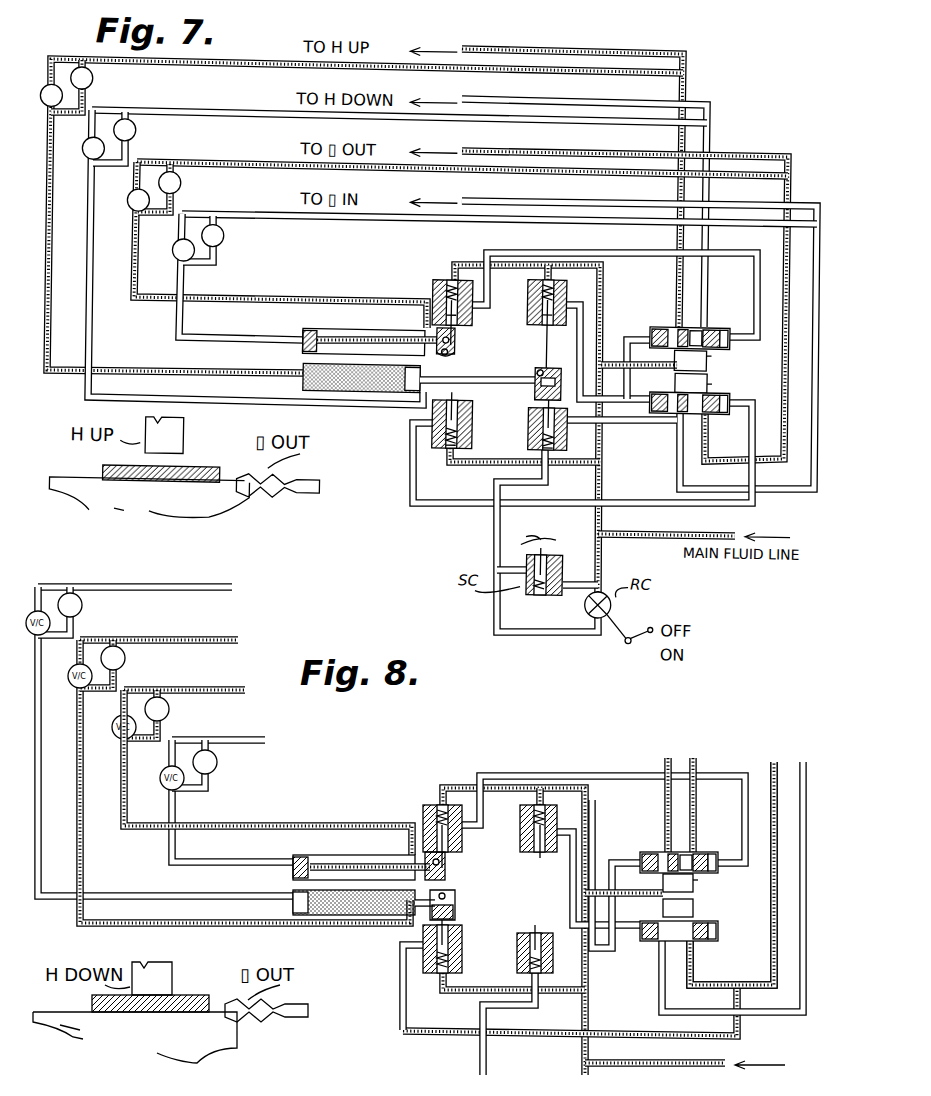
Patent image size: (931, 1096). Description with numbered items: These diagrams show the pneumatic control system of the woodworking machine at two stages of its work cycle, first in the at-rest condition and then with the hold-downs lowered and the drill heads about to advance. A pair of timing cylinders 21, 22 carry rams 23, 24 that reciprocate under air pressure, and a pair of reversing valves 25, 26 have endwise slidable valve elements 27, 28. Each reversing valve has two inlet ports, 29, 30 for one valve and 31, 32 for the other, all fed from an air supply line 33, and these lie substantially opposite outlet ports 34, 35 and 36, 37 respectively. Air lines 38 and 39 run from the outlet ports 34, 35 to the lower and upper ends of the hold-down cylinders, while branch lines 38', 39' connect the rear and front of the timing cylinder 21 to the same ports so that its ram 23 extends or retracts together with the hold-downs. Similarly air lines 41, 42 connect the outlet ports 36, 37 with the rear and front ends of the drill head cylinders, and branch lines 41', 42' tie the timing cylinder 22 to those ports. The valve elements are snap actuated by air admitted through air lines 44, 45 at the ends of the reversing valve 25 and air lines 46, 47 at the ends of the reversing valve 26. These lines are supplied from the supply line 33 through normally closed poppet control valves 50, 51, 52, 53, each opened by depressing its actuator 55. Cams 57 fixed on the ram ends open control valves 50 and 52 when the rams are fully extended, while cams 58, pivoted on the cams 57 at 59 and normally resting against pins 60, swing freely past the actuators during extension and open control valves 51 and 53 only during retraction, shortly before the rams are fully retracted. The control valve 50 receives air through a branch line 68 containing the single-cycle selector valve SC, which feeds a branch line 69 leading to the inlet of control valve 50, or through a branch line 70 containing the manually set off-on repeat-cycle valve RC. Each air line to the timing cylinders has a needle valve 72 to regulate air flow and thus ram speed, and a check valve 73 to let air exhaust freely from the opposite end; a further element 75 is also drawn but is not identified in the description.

In FIG. 7, the timing cylinder 21 is at (389, 398).
In FIG. 8, the timing cylinder 21 is at (350, 925).
In FIG. 7, the timing cylinder 22 is at (310, 340).
In FIG. 8, the timing cylinder 22 is at (293, 855).
In FIG. 7, the ram 23 is at (526, 384).
In FIG. 8, the ram 23 is at (385, 920).
In FIG. 7, the ram 24 is at (385, 337).
In FIG. 8, the ram 24 is at (370, 857).
In FIG. 7, the reversing valve 25 is at (657, 325).
In FIG. 8, the reversing valve 25 is at (642, 852).
In FIG. 7, the reversing valve 26 is at (659, 412).
In FIG. 8, the reversing valve 26 is at (642, 940).
In FIG. 7, the valve element 27 is at (721, 325).
In FIG. 8, the valve element 27 is at (710, 853).
In FIG. 7, the valve element 28 is at (729, 392).
In FIG. 8, the valve element 28 is at (714, 918).
In FIG. 7, the inlet port 29 is at (676, 356).
In FIG. 8, the inlet port 29 is at (662, 883).
In FIG. 7, the inlet port 30 is at (713, 355).
In FIG. 8, the inlet port 30 is at (698, 884).
In FIG. 7, the inlet port 31 is at (676, 382).
In FIG. 7, the inlet port 32 is at (714, 383).
In FIG. 8, the inlet port 32 is at (695, 906).
In FIG. 7, the air supply line 33 is at (608, 478).
In FIG. 8, the air supply line 33 is at (592, 1005).
In FIG. 7, the outlet port 34 is at (680, 325).
In FIG. 8, the outlet port 34 is at (670, 852).
In FIG. 7, the outlet port 35 is at (707, 324).
In FIG. 8, the outlet port 35 is at (697, 852).
In FIG. 7, the outlet port 36 is at (682, 413).
In FIG. 7, the outlet port 37 is at (712, 412).
In FIG. 8, the outlet port 37 is at (693, 938).
In FIG. 7, the air lines 38 is at (571, 178).
In FIG. 7, the branch line 38' is at (364, 206).
In FIG. 7, the air lines 39 is at (611, 204).
In FIG. 8, the air lines 39 is at (701, 794).
In FIG. 7, the branch line 39' is at (396, 247).
In FIG. 8, the branch line 39' is at (165, 741).
In FIG. 7, the air lines 41 is at (638, 353).
In FIG. 7, the branch line 41' is at (498, 268).
In FIG. 7, the air lines 42 is at (636, 288).
In FIG. 8, the air lines 42 is at (740, 859).
In FIG. 7, the branch line 42' is at (461, 236).
In FIG. 8, the branch line 42' is at (268, 772).
In FIG. 7, the air line 44 is at (625, 333).
In FIG. 7, the air line 45 is at (737, 337).
In FIG. 7, the air line 46 is at (642, 420).
In FIG. 7, the air line 47 is at (757, 412).
In FIG. 8, the air line 47 is at (407, 1034).
In FIG. 7, the control valve 50 is at (562, 437).
In FIG. 8, the control valve 50 is at (552, 958).
In FIG. 7, the control valve 51 is at (431, 297).
In FIG. 8, the control valve 51 is at (423, 818).
In FIG. 7, the control valve 52 is at (524, 311).
In FIG. 8, the control valve 52 is at (510, 827).
In FIG. 7, the control valve 53 is at (474, 436).
In FIG. 8, the control valve 53 is at (463, 958).
In FIG. 7, the actuator 55 is at (548, 327).
In FIG. 7, the cam 57 is at (562, 393).
In FIG. 8, the cam 57 is at (456, 914).
In FIG. 7, the cam 58 is at (455, 354).
In FIG. 8, the cam 58 is at (455, 897).
In FIG. 7, the pivot 59 is at (444, 361).
In FIG. 7, the pin 60 is at (539, 397).
In FIG. 7, the branch line 68 is at (574, 576).
In FIG. 7, the branch line 69 is at (499, 543).
In FIG. 7, the branch line 70 is at (576, 633).
In FIG. 7, the needle valve 72 is at (90, 89).
In FIG. 8, the needle valve 72 is at (125, 660).
In FIG. 7, the check valve 73 is at (77, 168).
In FIG. 7, the port 75 is at (692, 324).
In FIG. 8, the port 75 is at (682, 852).